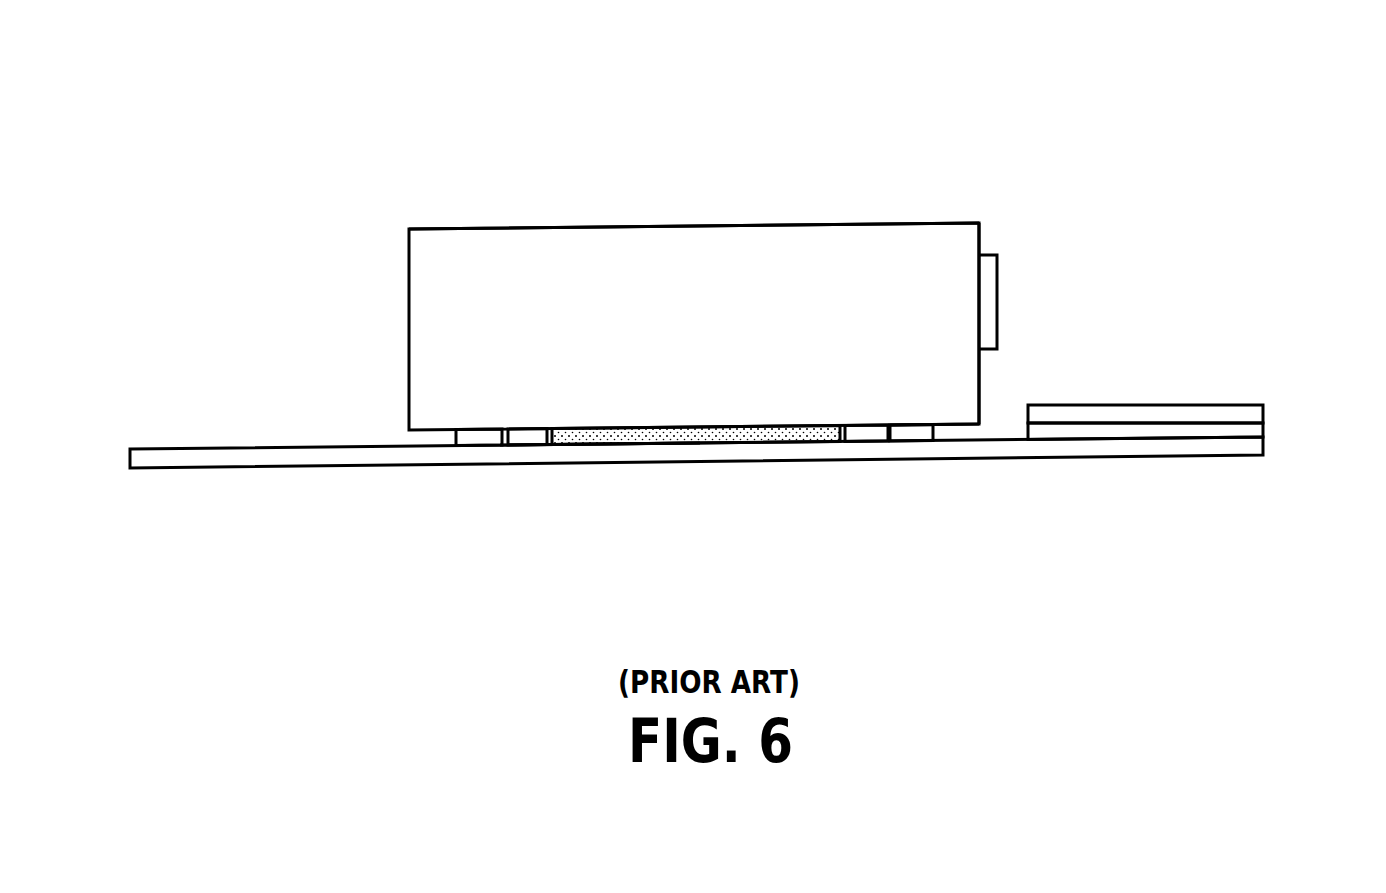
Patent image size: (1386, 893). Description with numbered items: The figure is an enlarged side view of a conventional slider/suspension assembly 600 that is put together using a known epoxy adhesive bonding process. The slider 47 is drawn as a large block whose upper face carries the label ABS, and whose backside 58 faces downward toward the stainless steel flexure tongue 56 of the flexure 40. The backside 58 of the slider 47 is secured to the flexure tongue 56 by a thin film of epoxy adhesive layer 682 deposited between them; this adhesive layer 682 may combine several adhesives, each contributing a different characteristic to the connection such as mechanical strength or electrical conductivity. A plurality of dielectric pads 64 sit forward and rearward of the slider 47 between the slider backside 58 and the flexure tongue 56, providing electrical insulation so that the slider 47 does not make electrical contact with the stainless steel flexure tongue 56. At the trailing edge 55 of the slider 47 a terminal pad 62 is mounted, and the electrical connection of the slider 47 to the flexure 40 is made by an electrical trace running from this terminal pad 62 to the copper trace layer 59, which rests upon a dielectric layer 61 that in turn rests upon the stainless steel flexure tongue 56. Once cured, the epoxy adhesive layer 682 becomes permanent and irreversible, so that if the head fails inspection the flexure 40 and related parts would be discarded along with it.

The slider/suspension assembly 600 is at (735, 90).
The slider 47 is at (725, 343).
The air bearing surface ABS is at (695, 186).
The trailing edge 55 is at (977, 246).
The terminal pad 62 is at (988, 294).
The backside 58 is at (976, 392).
The dielectric pads 64 is at (1005, 476).
The epoxy adhesive layer 682 is at (715, 462).
The flexure 40 is at (752, 424).
The copper trace layer 59 is at (1145, 381).
The dielectric layer 61 is at (1145, 460).
The flexure tongue 56 is at (574, 487).